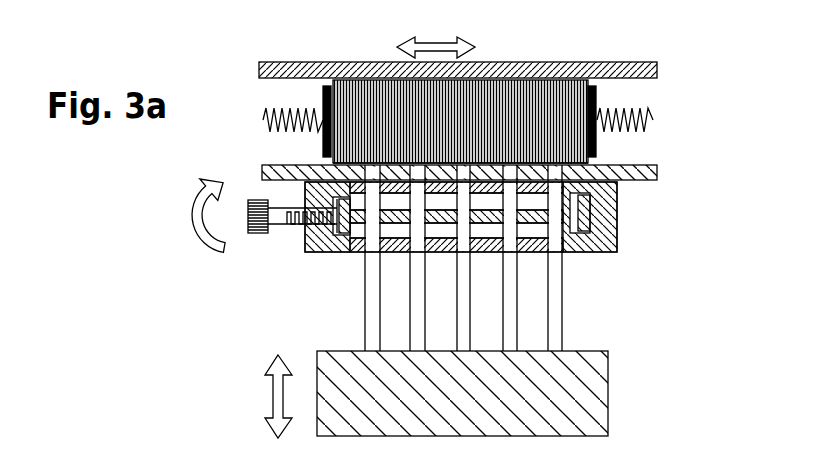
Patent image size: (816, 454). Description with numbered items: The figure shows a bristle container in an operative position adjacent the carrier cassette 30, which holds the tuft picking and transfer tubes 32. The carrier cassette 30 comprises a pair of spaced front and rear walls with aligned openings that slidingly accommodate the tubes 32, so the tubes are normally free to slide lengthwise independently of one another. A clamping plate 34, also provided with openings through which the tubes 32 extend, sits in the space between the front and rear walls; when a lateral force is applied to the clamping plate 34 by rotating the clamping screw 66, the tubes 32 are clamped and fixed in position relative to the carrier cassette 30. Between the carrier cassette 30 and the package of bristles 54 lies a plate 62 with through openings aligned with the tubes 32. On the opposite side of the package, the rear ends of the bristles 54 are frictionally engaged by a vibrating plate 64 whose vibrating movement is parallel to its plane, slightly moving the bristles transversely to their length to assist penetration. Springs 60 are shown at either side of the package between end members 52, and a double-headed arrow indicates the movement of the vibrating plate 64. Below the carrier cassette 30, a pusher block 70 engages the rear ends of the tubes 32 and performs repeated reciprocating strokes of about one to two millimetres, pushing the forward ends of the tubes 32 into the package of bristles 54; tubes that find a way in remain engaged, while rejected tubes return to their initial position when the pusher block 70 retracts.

The carrier cassette 30 is at (617, 222).
The tuft picking and transfer tubes 32 is at (563, 312).
The clamping plate 34 is at (343, 225).
The end plates of stack 52 is at (598, 143).
The package of bristles 54 is at (515, 95).
The springs 60 is at (262, 120).
The plate 62 is at (657, 172).
The vibrating plate 64 is at (618, 62).
The clamping screw 66 is at (285, 215).
The pusher block 70 is at (598, 378).